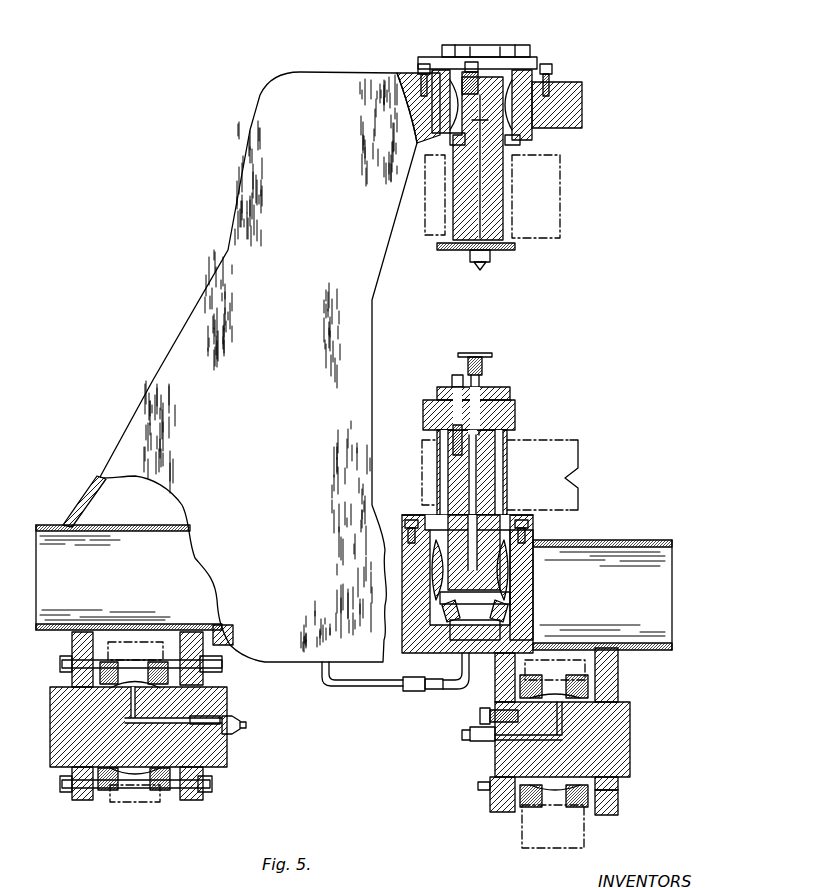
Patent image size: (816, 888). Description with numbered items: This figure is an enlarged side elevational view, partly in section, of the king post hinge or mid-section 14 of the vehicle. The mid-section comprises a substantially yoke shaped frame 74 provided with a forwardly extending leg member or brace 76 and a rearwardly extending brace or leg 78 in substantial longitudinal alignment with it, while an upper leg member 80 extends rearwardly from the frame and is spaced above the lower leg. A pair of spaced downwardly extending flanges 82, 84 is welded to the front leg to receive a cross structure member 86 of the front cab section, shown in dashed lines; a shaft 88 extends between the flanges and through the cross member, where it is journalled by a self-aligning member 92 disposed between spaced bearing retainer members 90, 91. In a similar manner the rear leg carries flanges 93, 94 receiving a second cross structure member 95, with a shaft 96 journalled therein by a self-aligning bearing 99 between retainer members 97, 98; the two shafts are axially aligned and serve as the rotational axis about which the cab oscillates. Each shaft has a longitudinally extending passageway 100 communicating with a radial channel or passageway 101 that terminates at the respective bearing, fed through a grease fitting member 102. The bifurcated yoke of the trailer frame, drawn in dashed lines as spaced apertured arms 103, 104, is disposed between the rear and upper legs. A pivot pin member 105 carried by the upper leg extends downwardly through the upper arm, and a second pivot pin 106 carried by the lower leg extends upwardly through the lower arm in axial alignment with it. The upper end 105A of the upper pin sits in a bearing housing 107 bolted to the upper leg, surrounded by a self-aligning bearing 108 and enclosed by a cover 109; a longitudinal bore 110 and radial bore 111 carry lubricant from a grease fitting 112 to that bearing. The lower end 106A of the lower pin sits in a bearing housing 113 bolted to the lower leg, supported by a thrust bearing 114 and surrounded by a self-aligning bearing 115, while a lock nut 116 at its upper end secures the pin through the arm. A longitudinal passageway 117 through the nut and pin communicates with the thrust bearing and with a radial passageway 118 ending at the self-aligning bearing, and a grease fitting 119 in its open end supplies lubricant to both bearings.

The king post hinge or mid-section 14 is at (251, 192).
The yoke shaped frame 74 is at (88, 492).
The forwardly extending leg member or brace 76 is at (60, 538).
The rearwardly extending brace or leg 78 is at (643, 562).
The upper leg member 80 is at (572, 90).
The downwardly extending flange 82 is at (65, 786).
The downwardly extending flange 84 is at (210, 792).
The cross structure member 86 is at (134, 797).
The shaft 88 is at (227, 762).
The bearing retainer member 90 is at (88, 801).
The bearing retainer member 91 is at (185, 801).
The self-aligning member 92 is at (212, 673).
The downwardly extending flange 93 is at (618, 805).
The downwardly extending flange 94 is at (490, 805).
The cross structure member 95 is at (570, 837).
The shaft 96 is at (632, 708).
The bearing retainer member 97 is at (618, 782).
The bearing retainer member 98 is at (512, 812).
The self-aligning bearing 99 is at (618, 677).
The longitudinally extending passageway 100 is at (197, 720).
The radial channel or passageway 101 is at (133, 710).
The grease fitting member 102 is at (238, 734).
The apertured arm 103 is at (550, 231).
The apertured arm 104 is at (568, 458).
The pivot pin member 105 is at (487, 203).
The upper end of the pivot pin 105A is at (530, 137).
The second pivot pin 106 is at (498, 445).
The lower end of the pivot pin 106A is at (523, 590).
The bearing housing 107 is at (433, 63).
The self-aligning bearing 108 is at (535, 76).
The cover 109 is at (520, 46).
The longitudinal bore 110 is at (487, 208).
The radial bore 111 is at (461, 85).
The grease fitting 112 is at (483, 263).
The bearing housing 113 is at (412, 548).
The thrust bearing 114 is at (502, 611).
The self-aligning bearing 115 is at (466, 531).
The lock nut 116 is at (492, 388).
The longitudinal passageway 117 is at (472, 476).
The radial passageway 118 is at (490, 568).
The grease fitting 119 is at (466, 373).